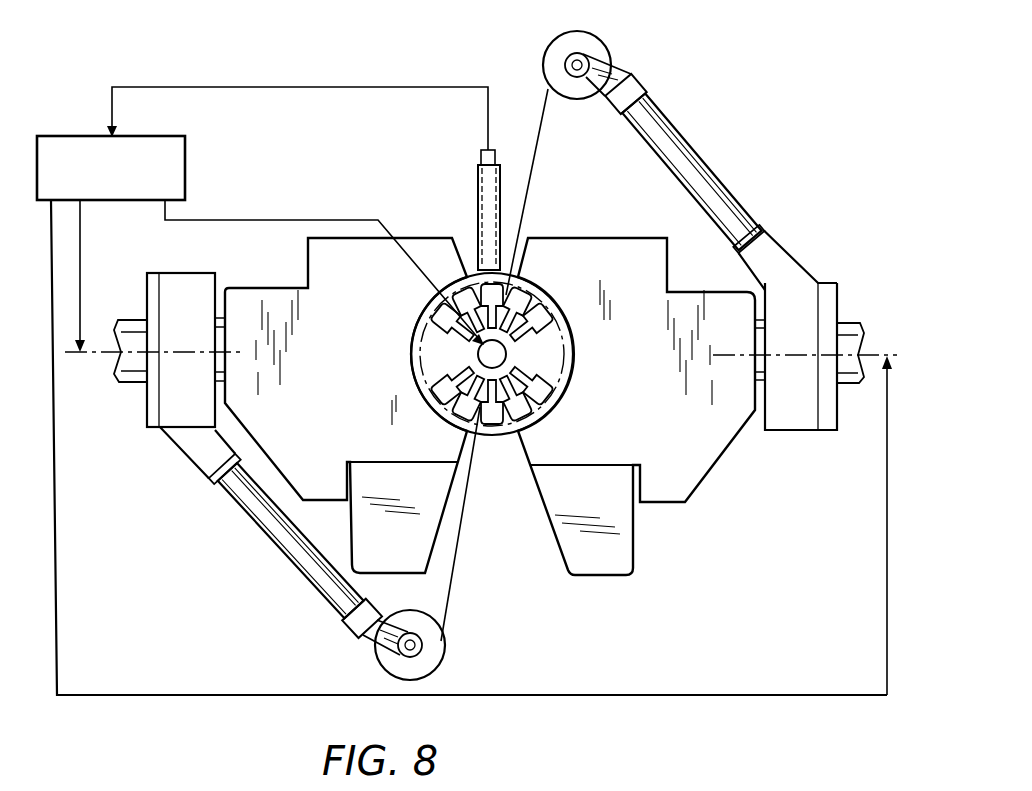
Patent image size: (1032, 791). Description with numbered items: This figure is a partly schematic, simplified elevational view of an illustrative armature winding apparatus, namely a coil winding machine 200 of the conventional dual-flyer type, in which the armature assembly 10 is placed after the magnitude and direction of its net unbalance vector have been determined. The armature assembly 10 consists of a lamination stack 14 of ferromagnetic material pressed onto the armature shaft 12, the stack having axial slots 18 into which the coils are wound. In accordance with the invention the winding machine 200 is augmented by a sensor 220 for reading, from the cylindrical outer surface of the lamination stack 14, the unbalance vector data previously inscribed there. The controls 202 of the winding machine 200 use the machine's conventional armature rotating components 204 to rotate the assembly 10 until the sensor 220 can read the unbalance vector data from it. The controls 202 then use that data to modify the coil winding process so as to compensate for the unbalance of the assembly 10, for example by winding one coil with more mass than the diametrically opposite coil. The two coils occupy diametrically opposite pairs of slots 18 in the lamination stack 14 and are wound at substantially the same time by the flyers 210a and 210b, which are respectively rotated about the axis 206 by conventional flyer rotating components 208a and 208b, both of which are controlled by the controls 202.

The armature assembly 10 is at (487, 342).
The armature shaft 12 is at (478, 352).
The lamination stack 14 is at (548, 357).
The axial slots 18 is at (512, 405).
The coil winding machine 200 is at (260, 572).
The controls 202 is at (187, 170).
The armature rotating components 204 is at (336, 218).
The axis 206 is at (234, 350).
The flyer rotating components 208a is at (887, 597).
The flyer rotating components 208b is at (82, 250).
The flyer 210a is at (733, 196).
The flyer 210b is at (333, 599).
The sensor 220 is at (477, 191).